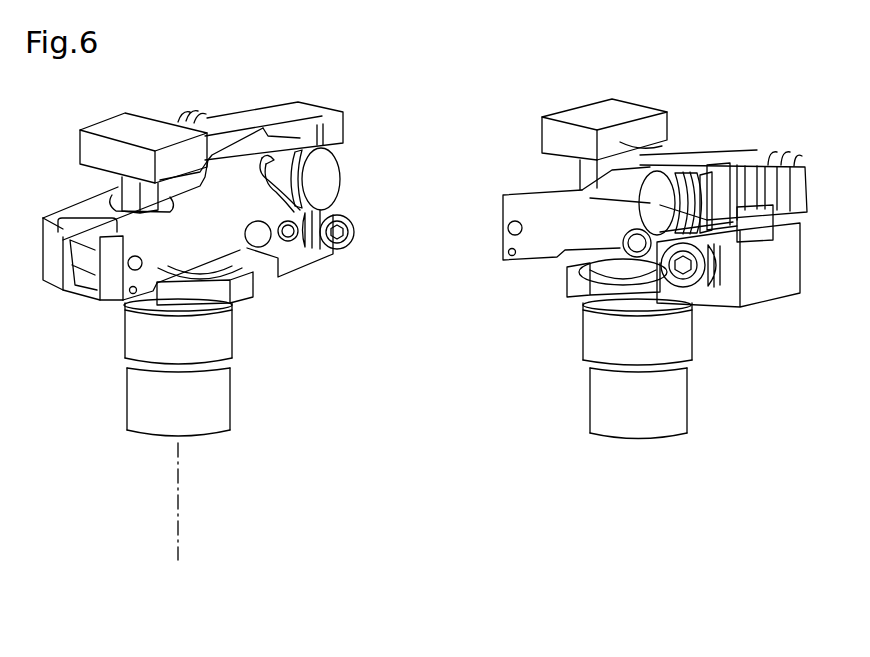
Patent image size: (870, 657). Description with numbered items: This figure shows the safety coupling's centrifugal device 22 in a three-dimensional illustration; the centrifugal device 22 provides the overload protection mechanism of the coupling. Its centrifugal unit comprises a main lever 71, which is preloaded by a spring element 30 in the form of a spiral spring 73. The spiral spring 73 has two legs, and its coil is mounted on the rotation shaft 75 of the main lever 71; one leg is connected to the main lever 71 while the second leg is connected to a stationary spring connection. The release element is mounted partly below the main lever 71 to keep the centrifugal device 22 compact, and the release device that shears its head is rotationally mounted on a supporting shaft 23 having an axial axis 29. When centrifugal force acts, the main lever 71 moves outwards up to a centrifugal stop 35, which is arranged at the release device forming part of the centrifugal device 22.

The centrifugal device 22 is at (552, 85).
The supporting shaft 23 is at (610, 413).
The axial axis of supporting shaft 29 is at (172, 562).
The spring element for preloading the main lever 30 is at (700, 183).
The centrifugal stop 35 is at (560, 128).
The main lever 71 is at (577, 225).
The spiral spring 73 is at (593, 153).
The rotation shaft 75 is at (647, 202).